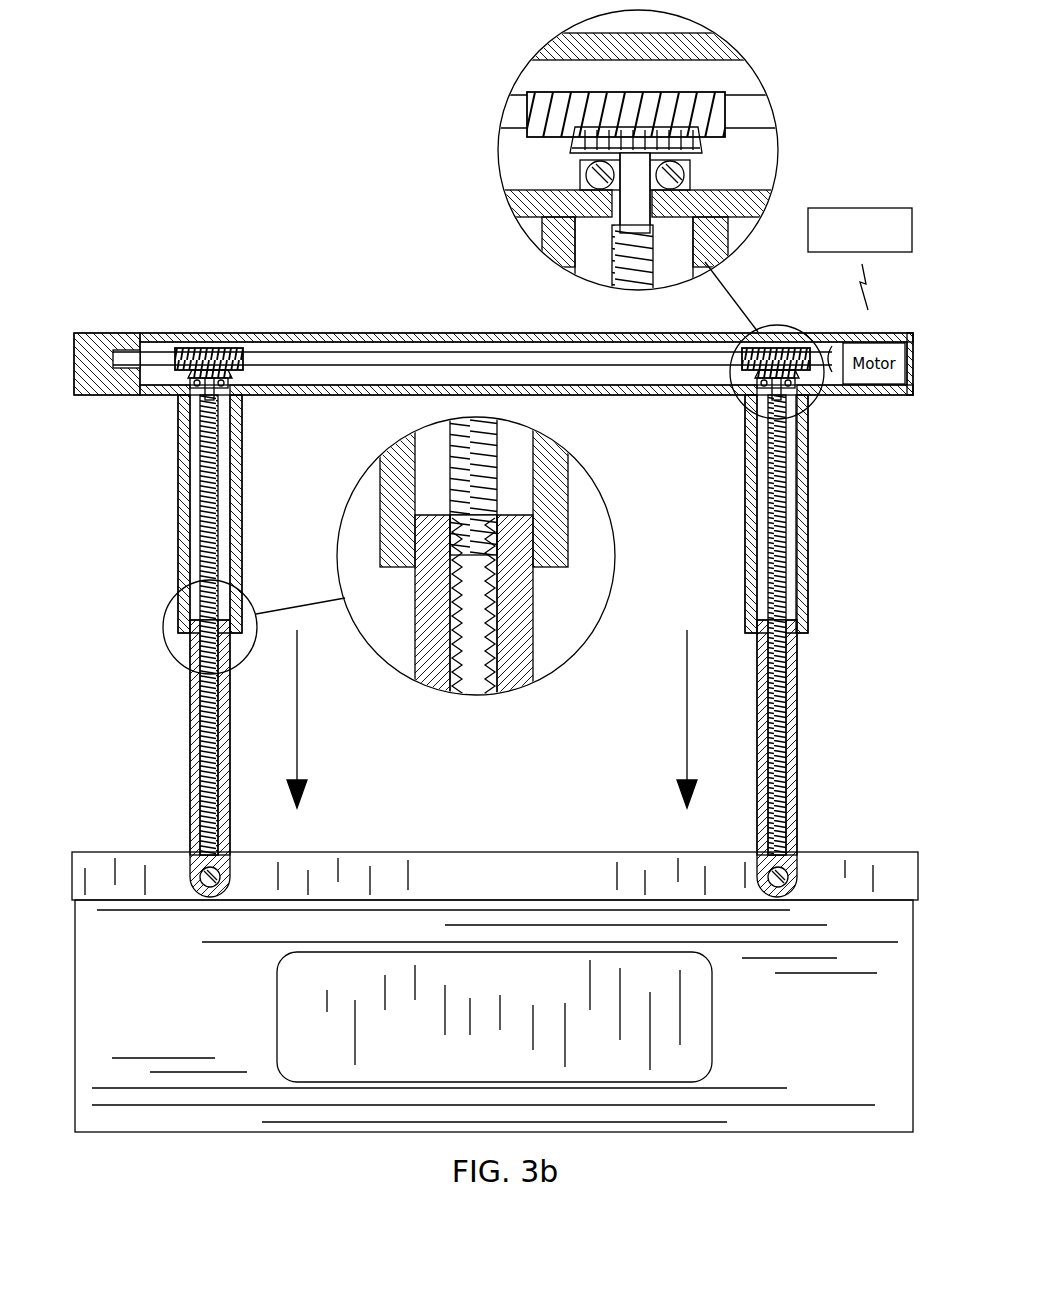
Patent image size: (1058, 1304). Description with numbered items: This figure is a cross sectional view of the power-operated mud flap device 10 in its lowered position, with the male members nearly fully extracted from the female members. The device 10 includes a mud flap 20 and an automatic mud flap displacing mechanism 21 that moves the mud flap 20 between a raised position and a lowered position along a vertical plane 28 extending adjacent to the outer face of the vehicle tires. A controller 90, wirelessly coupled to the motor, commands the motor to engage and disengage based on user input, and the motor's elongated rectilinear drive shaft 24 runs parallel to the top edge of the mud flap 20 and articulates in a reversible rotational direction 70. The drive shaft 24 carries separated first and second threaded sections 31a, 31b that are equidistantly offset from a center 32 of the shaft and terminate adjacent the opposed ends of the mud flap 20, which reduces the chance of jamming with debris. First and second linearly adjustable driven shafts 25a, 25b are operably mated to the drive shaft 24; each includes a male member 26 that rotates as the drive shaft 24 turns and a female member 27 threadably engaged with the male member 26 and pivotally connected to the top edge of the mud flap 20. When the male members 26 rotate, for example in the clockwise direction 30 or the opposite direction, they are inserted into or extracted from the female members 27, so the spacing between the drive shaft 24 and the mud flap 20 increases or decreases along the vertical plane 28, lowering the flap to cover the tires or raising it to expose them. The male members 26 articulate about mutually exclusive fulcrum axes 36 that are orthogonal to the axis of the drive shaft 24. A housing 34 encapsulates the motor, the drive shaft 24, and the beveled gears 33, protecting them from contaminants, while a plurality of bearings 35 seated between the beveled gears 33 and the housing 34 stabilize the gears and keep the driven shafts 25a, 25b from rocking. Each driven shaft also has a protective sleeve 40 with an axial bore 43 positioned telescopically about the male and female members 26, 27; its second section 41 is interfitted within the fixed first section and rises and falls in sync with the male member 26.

The power-operated mud flap device 10 is at (198, 125).
The mud flap 20 is at (228, 1118).
The automatic mud flap displacing mechanism 21 is at (130, 212).
The drive shaft 24 is at (345, 335).
The first linearly adjustable driven shaft 25a is at (178, 586).
The second linearly adjustable driven shaft 25b is at (808, 582).
The male member 26 is at (218, 512).
The female member 27 is at (190, 828).
The vertical plane 28 is at (297, 700).
The clockwise direction 30 is at (228, 422).
The first threaded section 31a is at (197, 345).
The second threaded section 31b is at (790, 358).
The center of the drive shaft 32 is at (399, 335).
The beveled gears 33 is at (697, 152).
The housing 34 is at (100, 332).
The bearings 35 is at (236, 380).
The fulcrum axes 36 is at (210, 932).
The protective sleeve 40 is at (178, 511).
The second section of the protective sleeve 41 is at (226, 745).
The axial bore 43 is at (200, 690).
The reversible rotational direction 70 is at (505, 368).
The controller 90 is at (885, 208).